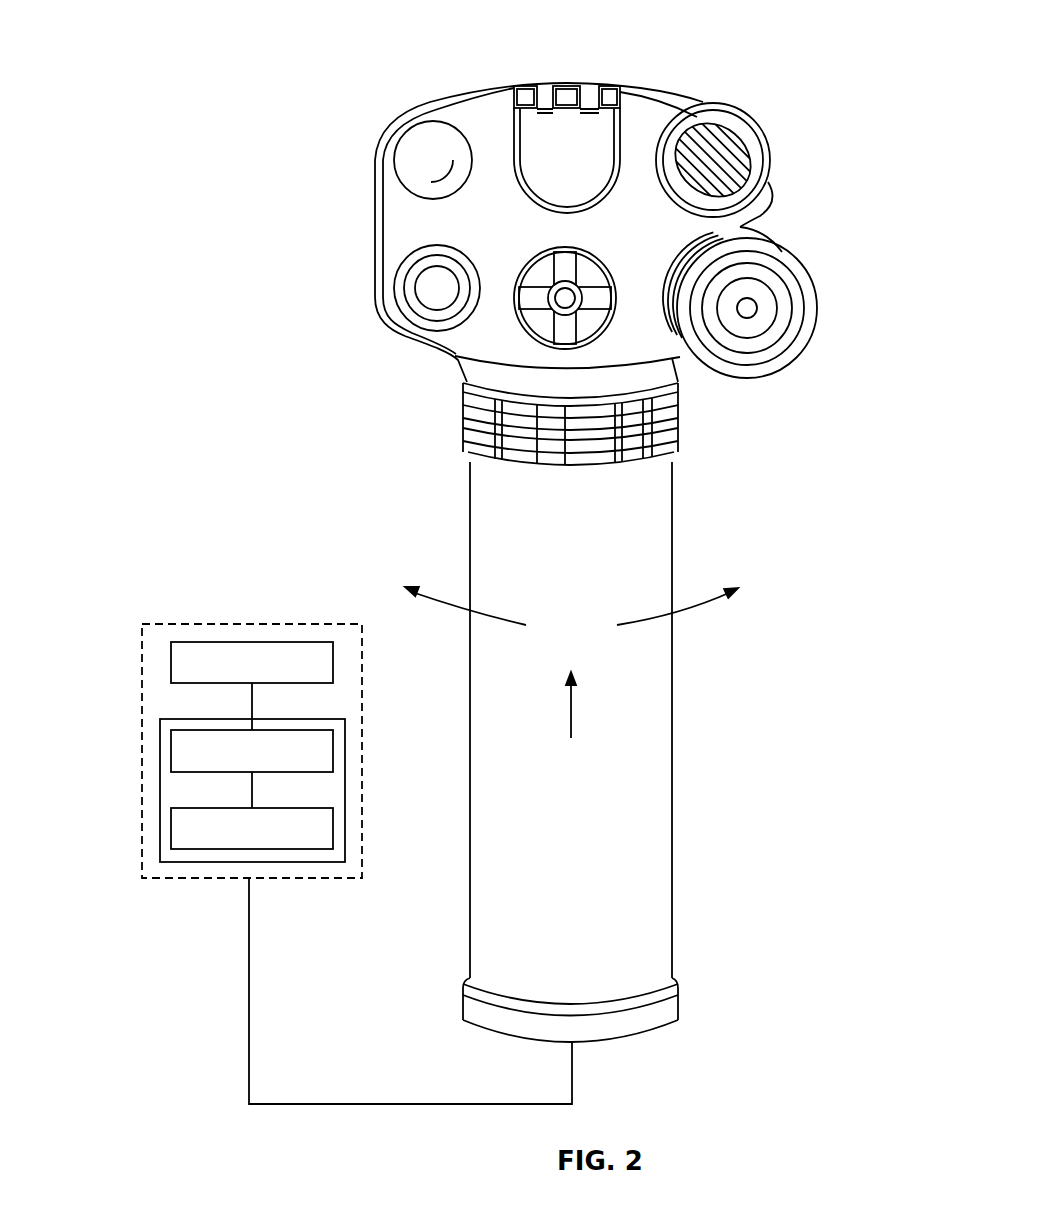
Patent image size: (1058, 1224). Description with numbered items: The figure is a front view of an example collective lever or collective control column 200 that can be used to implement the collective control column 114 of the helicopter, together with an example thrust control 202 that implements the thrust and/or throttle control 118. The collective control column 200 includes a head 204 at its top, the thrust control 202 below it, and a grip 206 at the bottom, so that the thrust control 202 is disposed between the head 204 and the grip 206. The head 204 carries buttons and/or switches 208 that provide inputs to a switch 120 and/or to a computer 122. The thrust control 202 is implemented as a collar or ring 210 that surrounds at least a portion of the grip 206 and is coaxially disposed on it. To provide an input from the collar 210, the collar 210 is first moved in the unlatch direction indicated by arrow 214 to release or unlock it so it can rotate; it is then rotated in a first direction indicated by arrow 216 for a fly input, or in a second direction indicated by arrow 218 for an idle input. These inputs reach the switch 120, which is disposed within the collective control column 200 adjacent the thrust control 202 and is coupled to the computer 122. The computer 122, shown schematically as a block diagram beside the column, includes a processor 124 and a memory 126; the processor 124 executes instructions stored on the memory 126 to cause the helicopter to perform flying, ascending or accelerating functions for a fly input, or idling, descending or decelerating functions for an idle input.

The collective control column 200 is at (586, 536).
The collective control column 114 is at (400, 88).
The head 204 is at (748, 58).
The buttons and/or switches 208 is at (735, 152).
The thrust control 202 is at (539, 707).
The thrust control 118 is at (435, 397).
The collar 210 is at (672, 410).
The grip 206 is at (658, 887).
The arrow 214 is at (573, 710).
The arrow 216 is at (450, 613).
The arrow 218 is at (697, 613).
The switch 120 is at (172, 663).
The computer 122 is at (158, 788).
The processor 124 is at (172, 752).
The memory 126 is at (172, 828).